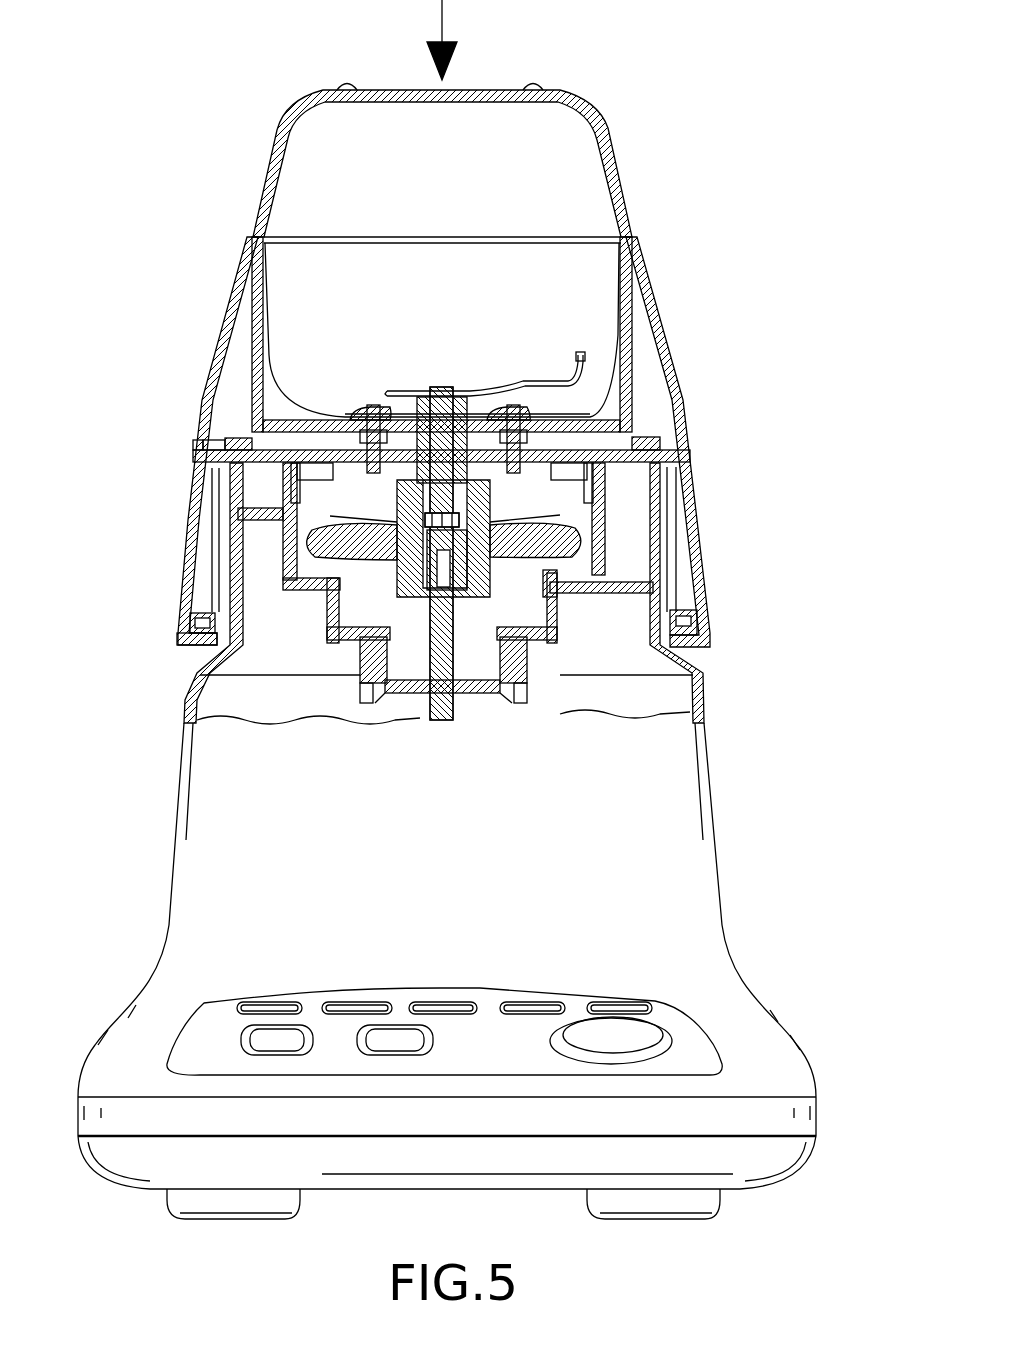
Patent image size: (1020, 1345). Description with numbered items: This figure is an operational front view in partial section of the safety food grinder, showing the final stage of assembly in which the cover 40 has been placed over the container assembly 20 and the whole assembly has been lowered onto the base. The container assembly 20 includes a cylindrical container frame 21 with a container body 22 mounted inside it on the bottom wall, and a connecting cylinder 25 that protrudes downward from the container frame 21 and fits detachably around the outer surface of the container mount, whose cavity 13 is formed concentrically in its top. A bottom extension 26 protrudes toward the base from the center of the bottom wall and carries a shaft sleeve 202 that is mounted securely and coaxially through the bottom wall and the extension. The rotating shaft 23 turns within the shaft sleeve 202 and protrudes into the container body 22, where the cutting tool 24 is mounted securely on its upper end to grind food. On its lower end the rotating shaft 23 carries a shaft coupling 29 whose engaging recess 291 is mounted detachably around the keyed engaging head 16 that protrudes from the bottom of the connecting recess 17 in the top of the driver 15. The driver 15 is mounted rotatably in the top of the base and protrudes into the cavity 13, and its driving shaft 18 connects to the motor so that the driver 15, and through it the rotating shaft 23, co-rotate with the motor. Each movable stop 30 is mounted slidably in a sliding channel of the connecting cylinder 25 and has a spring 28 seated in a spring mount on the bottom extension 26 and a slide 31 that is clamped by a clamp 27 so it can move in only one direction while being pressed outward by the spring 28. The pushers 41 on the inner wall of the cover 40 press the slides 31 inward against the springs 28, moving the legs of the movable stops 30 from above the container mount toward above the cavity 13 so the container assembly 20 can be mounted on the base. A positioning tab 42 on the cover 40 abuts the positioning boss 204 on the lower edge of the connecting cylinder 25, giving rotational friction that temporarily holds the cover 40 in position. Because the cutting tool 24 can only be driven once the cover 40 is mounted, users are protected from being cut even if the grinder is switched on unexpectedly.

The container body 22 is at (510, 270).
The cover 40 is at (623, 188).
The container frame 21 is at (630, 314).
The cutting tool 24 is at (583, 360).
The container assembly 20 is at (652, 372).
The rotating shaft 23 is at (440, 385).
The bottom extension 26 is at (467, 393).
The shaft sleeve 202 is at (420, 410).
The spring 28 is at (347, 420).
The movable stop 30 is at (274, 440).
The slide 31 is at (240, 437).
The pusher 41 is at (193, 467).
The clamp 27 is at (307, 473).
The cavity 13 is at (307, 527).
The positioning boss 204 is at (200, 620).
The positioning tab 42 is at (197, 643).
The engaging head 16 is at (330, 620).
The driving shaft 18 is at (450, 718).
The engaging recess 291 is at (636, 450).
The shaft coupling 29 is at (495, 518).
The driver 15 is at (560, 524).
The connecting cylinder 25 is at (677, 570).
The connecting recess 17 is at (680, 618).